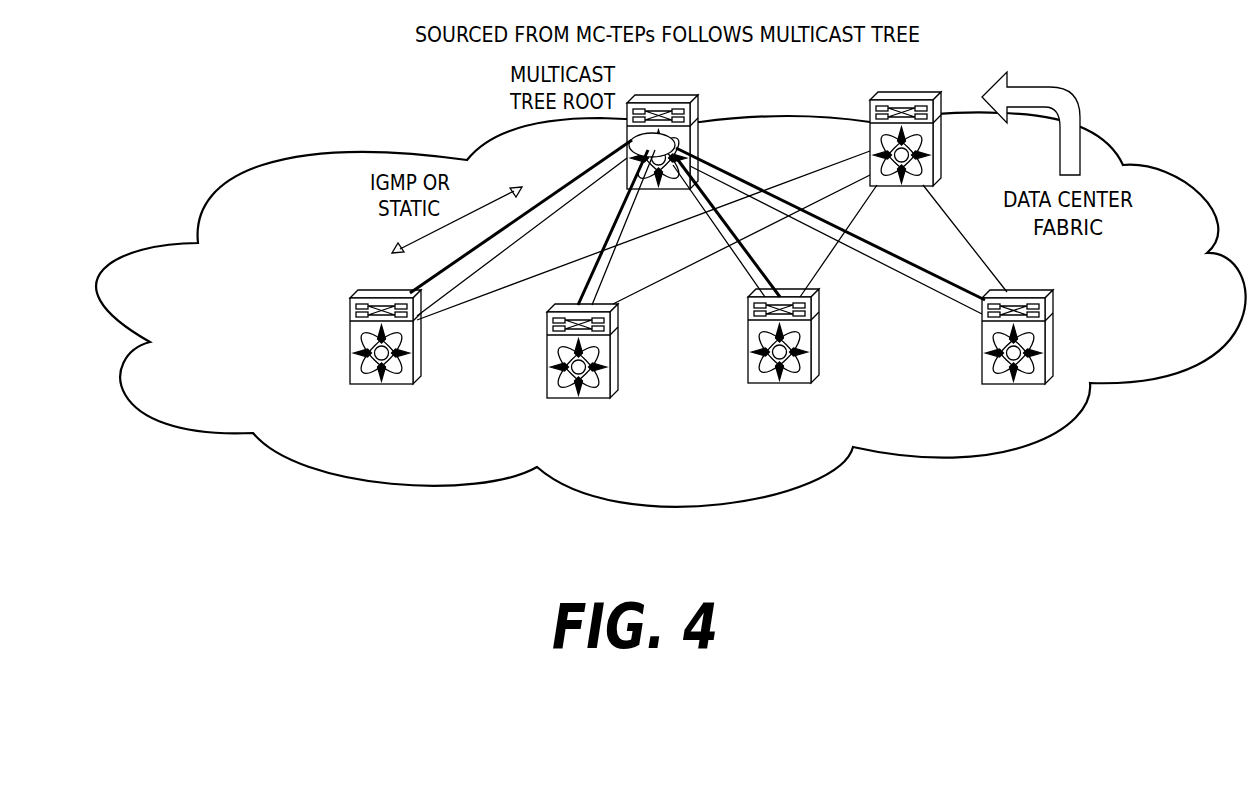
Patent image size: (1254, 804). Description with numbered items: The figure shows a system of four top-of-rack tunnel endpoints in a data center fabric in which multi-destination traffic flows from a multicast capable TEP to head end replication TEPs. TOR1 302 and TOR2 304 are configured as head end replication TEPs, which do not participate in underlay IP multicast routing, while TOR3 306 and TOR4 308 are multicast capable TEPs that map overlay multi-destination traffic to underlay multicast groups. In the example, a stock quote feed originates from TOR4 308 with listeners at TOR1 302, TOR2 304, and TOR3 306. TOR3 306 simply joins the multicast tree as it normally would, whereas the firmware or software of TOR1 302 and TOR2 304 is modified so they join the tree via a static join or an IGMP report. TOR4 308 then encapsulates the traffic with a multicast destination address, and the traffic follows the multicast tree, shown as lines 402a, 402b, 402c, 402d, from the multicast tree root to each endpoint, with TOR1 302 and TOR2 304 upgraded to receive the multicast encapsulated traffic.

The TOR1 302 is at (350, 312).
The TOR2 304 is at (547, 320).
The TOR3 306 is at (748, 312).
The TOR4 308 is at (980, 317).
The line 402a is at (427, 277).
The line 402b is at (600, 241).
The line 402c is at (737, 221).
The line 402d is at (897, 254).